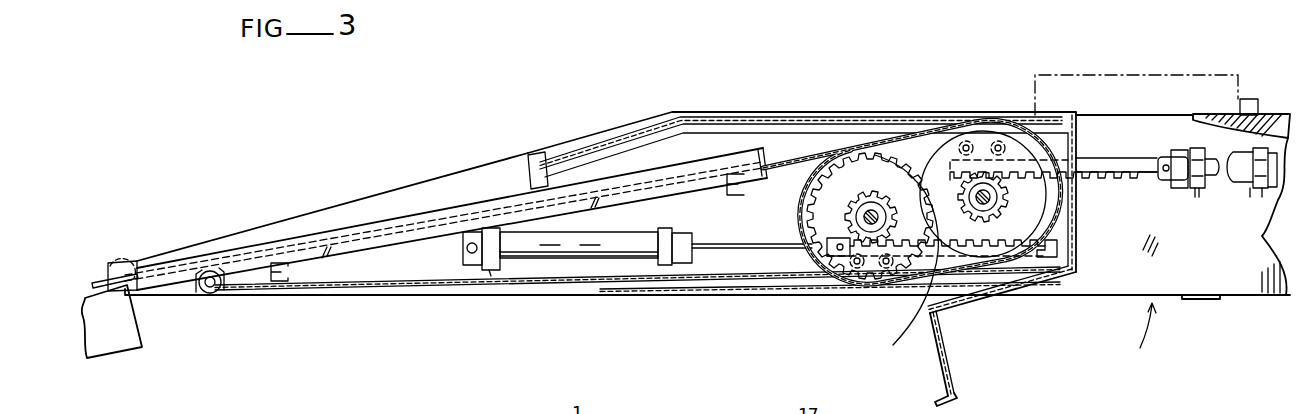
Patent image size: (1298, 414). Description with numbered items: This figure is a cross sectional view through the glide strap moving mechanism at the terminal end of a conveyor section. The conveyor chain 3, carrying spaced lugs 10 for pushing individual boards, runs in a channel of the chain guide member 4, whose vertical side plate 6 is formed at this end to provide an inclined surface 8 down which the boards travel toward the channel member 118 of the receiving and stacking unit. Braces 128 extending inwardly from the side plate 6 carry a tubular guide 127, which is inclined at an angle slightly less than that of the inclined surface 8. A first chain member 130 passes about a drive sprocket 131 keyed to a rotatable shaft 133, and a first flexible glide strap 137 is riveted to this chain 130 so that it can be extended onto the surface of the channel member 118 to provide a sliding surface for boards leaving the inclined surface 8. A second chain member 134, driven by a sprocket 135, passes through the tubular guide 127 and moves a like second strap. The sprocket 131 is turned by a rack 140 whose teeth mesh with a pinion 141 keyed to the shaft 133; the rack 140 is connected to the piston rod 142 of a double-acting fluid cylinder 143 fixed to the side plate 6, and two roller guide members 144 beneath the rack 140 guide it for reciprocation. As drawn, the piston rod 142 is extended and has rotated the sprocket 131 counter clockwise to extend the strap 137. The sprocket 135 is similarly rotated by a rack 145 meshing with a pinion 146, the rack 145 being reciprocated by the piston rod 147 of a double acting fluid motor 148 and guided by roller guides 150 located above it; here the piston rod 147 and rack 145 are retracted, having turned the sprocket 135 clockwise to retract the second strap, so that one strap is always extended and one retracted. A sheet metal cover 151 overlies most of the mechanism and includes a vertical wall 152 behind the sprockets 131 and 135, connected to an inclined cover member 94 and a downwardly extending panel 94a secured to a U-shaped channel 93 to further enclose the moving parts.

The conveyor chains 3 is at (1282, 116).
The guide members 4 is at (707, 326).
The vertical side plates 6 is at (1207, 242).
The inclined surfaces 8 is at (382, 191).
The spaced lugs 10 is at (1256, 99).
The U-shaped channel 93 is at (955, 396).
The inclined cover member 94 is at (982, 303).
The downwardly extending panel 94a is at (947, 351).
The channel member 118 is at (140, 340).
The tubular guide 127 is at (497, 204).
The braces 128 is at (283, 270).
The first chain member 130 is at (806, 283).
The drive sprocket 131 is at (809, 211).
The rotatable shaft 133 is at (874, 211).
The second chain member 134 is at (893, 345).
The sprocket 135 is at (1056, 206).
The first flexible glide strap 137 is at (112, 275).
The rack 140 is at (1068, 251).
The pinion 141 is at (851, 205).
The piston rod 142 is at (717, 239).
The double-acting fluid cylinder 143 is at (608, 231).
The roller guide members 144 is at (886, 270).
The rack 145 is at (1114, 162).
The pinion 146 is at (1045, 213).
The piston rod 147 is at (1188, 157).
The double acting fluid motor 148 is at (1240, 188).
The roller guides 150 is at (997, 138).
The sheet metal cover 151 is at (763, 115).
The vertical wall 152 is at (1068, 245).